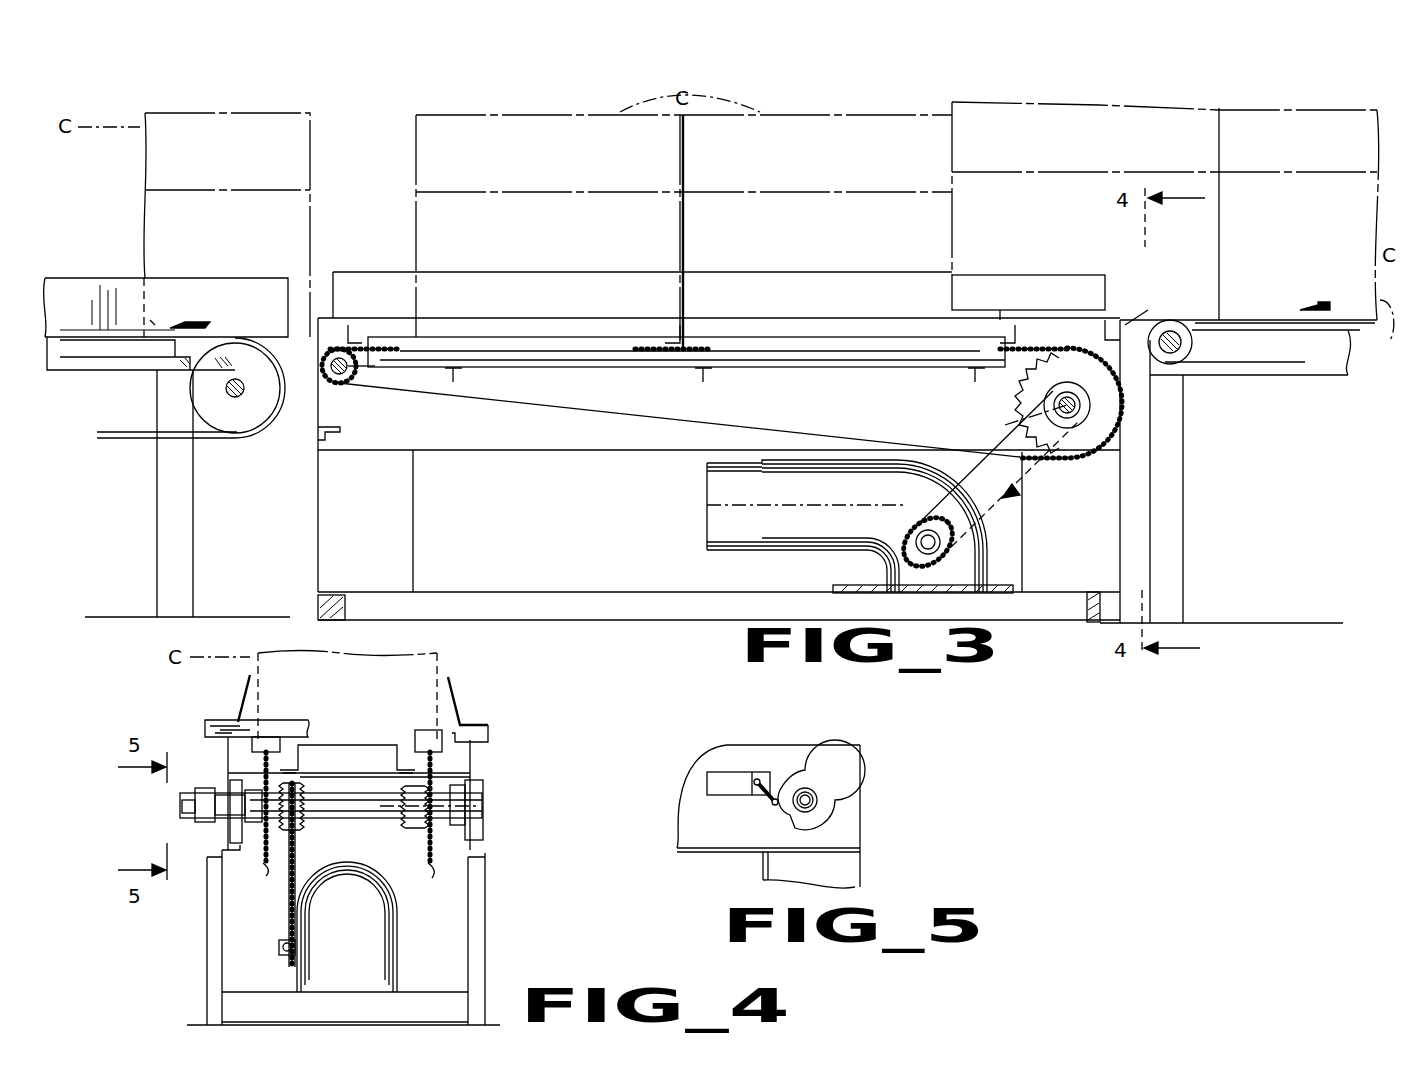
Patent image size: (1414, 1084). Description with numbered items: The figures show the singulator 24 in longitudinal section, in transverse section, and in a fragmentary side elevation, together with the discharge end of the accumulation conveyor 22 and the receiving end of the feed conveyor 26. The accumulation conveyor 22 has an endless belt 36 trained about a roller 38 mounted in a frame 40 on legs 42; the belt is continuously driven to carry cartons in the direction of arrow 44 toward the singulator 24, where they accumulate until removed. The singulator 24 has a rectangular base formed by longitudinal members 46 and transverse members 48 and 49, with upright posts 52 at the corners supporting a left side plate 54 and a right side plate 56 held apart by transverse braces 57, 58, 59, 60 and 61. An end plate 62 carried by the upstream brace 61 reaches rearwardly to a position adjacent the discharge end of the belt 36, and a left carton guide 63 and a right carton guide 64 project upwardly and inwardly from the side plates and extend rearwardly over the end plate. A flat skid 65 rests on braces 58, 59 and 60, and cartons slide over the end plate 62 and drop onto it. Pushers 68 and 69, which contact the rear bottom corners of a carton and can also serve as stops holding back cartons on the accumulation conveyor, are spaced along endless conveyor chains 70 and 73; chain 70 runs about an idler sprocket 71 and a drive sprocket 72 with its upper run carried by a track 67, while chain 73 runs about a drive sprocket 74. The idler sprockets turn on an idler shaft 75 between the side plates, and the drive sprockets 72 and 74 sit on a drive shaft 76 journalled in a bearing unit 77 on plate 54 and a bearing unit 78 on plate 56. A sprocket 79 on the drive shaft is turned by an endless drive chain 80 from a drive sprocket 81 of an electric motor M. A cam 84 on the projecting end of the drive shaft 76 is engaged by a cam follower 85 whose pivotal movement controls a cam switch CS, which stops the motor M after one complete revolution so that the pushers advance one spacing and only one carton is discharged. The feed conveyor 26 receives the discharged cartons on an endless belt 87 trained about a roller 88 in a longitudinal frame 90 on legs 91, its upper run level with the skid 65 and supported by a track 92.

In FIG. 3, the accumulation conveyor 22 is at (1280, 382).
In FIG. 3, the singulator 24 is at (392, 262).
In FIG. 4, the singulator 24 is at (470, 705).
In FIG. 3, the feed conveyor 26 is at (122, 262).
In FIG. 3, the endless belt 36 is at (1250, 320).
In FIG. 3, the roller 38 is at (1183, 348).
In FIG. 3, the frame 40 is at (1318, 374).
In FIG. 3, the legs 42 is at (1178, 467).
In FIG. 3, the arrow 44 is at (1324, 304).
In FIG. 3, the longitudinal members 46 is at (648, 592).
In FIG. 3, the transverse member 48 is at (317, 602).
In FIG. 3, the transverse member 49 is at (1086, 608).
In FIG. 4, the transverse member 49 is at (343, 1008).
In FIG. 3, the posts 52 is at (1078, 516).
In FIG. 4, the posts 52 is at (206, 948).
In FIG. 5, the posts 52 is at (850, 857).
In FIG. 4, the left side plate 54 is at (226, 750).
In FIG. 5, the left side plate 54 is at (862, 762).
In FIG. 3, the right side plate 56 is at (535, 450).
In FIG. 4, the right side plate 56 is at (472, 760).
In FIG. 3, the transverse brace 57 is at (317, 434).
In FIG. 3, the transverse brace 58 is at (446, 380).
In FIG. 3, the transverse brace 59 is at (705, 384).
In FIG. 3, the transverse brace 60 is at (970, 385).
In FIG. 4, the transverse brace 60 is at (472, 777).
In FIG. 3, the transverse brace 61 is at (1103, 336).
In FIG. 4, the transverse brace 61 is at (488, 741).
In FIG. 3, the end plate 62 is at (1108, 318).
In FIG. 4, the left carton guide 63 is at (242, 683).
In FIG. 3, the right carton guide 64 is at (712, 276).
In FIG. 4, the right carton guide 64 is at (460, 680).
In FIG. 3, the skid 65 is at (764, 336).
In FIG. 4, the skid 65 is at (346, 745).
In FIG. 3, the track 67 is at (800, 366).
In FIG. 3, the pushers 68 is at (362, 312).
In FIG. 4, the pushers 68 is at (268, 737).
In FIG. 4, the pushers 69 is at (428, 730).
In FIG. 3, the endless conveyor chain 70 is at (648, 360).
In FIG. 4, the endless conveyor chain 70 is at (266, 868).
In FIG. 3, the idler sprocket 71 is at (372, 366).
In FIG. 3, the drive sprocket 72 is at (1012, 405).
In FIG. 4, the drive sprocket 72 is at (264, 850).
In FIG. 4, the endless conveyor chain 73 is at (438, 864).
In FIG. 4, the drive sprocket 74 is at (425, 848).
In FIG. 3, the idler shaft 75 is at (348, 378).
In FIG. 3, the drive shaft 76 is at (1075, 395).
In FIG. 4, the drive shaft 76 is at (378, 812).
In FIG. 5, the drive shaft 76 is at (812, 812).
In FIG. 4, the bearing unit 77 is at (222, 848).
In FIG. 4, the bearing unit 78 is at (484, 803).
In FIG. 3, the sprocket 79 is at (1005, 428).
In FIG. 4, the sprocket 79 is at (298, 790).
In FIG. 3, the endless drive chain 80 is at (965, 533).
In FIG. 4, the endless drive chain 80 is at (290, 908).
In FIG. 3, the drive sprocket 81 is at (922, 522).
In FIG. 4, the drive sprocket 81 is at (278, 943).
In FIG. 4, the cam 84 is at (196, 830).
In FIG. 5, the cam 84 is at (830, 793).
In FIG. 5, the cam follower 85 is at (768, 806).
In FIG. 3, the endless belt 87 is at (85, 337).
In FIG. 3, the roller 88 is at (236, 430).
In FIG. 3, the longitudinal frame 90 is at (102, 280).
In FIG. 3, the legs 91 is at (162, 483).
In FIG. 3, the track 92 is at (78, 372).
In FIG. 3, the electric motor M is at (860, 526).
In FIG. 4, the electric motor M is at (347, 927).
In FIG. 5, the cam switch CS is at (720, 782).